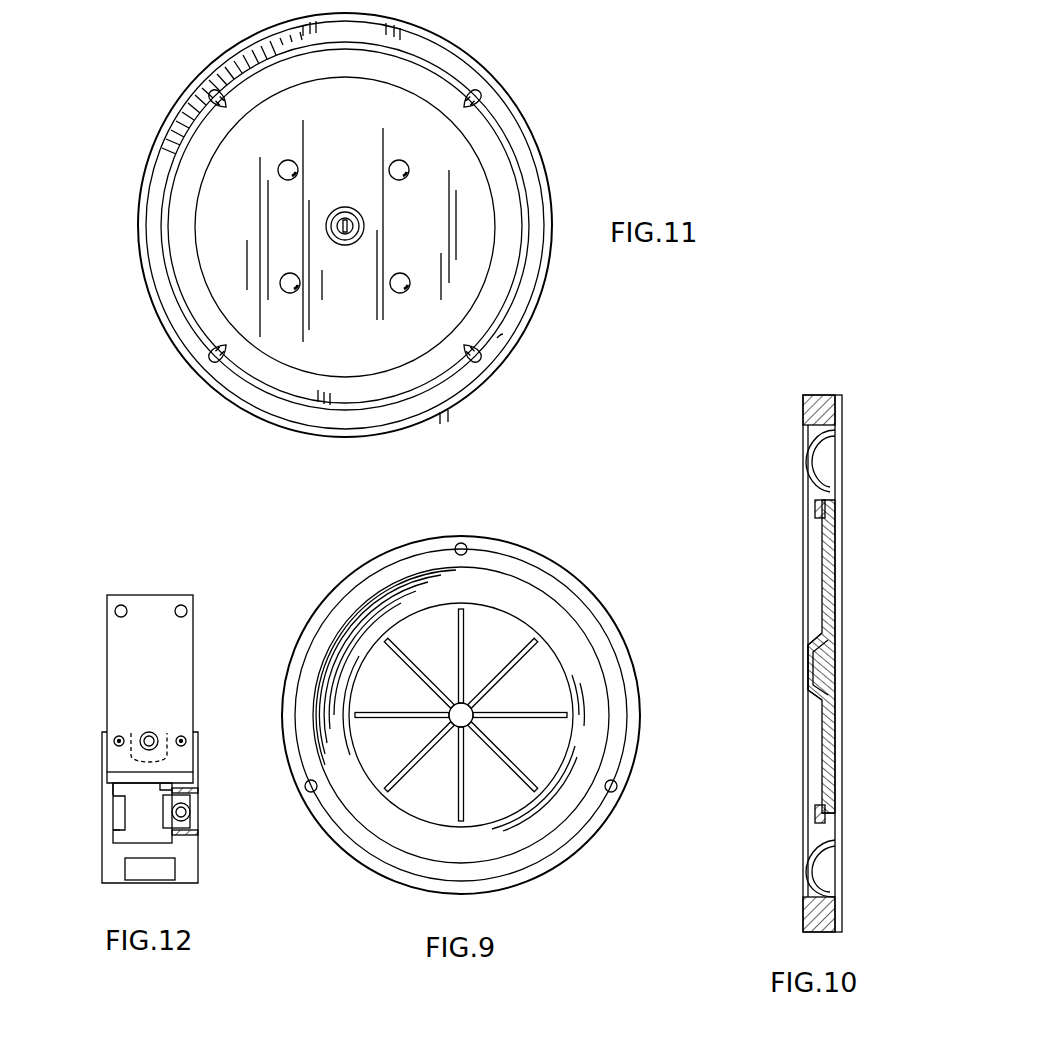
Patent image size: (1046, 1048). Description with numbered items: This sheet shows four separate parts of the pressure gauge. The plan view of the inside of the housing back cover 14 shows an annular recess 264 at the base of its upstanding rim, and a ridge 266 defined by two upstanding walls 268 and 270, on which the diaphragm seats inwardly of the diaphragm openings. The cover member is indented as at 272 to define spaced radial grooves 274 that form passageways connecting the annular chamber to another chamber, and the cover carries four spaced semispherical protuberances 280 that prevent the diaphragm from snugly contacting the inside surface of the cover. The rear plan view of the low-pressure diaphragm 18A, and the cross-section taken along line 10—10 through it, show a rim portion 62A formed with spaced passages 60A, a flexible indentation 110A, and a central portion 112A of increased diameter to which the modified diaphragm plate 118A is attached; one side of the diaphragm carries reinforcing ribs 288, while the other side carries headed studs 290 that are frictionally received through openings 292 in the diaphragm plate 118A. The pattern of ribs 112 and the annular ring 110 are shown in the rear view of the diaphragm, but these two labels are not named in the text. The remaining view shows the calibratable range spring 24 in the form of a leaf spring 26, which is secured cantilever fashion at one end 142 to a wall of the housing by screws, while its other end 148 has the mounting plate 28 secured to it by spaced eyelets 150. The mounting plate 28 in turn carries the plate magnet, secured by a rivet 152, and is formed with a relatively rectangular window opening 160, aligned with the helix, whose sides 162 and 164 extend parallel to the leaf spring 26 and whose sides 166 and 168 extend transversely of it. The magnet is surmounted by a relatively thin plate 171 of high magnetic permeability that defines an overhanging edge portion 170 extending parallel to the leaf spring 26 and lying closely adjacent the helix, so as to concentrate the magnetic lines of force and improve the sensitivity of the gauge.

In FIG. 11, the cover 14 is at (550, 165).
In FIG. 11, the annular recess 264 is at (538, 207).
In FIG. 11, the indentation 272 is at (525, 98).
In FIG. 11, the upstanding wall 270 is at (508, 265).
In FIG. 11, the ridge 266 is at (503, 312).
In FIG. 11, the upstanding wall 268 is at (497, 338).
In FIG. 11, the radial grooves 274 is at (476, 92).
In FIG. 11, the semispherical protuberances 280 is at (408, 166).
In FIG. 9, the diaphragm 18A is at (385, 890).
In FIG. 9, the rim portion 62A is at (630, 683).
In FIG. 10, the rim portion 62A is at (815, 395).
In FIG. 9, the annular ring 110 is at (580, 640).
In FIG. 9, the flexible indentation 110A is at (597, 733).
In FIG. 10, the flexible indentation 110A is at (815, 462).
In FIG. 9, the reinforcing ribs 288 is at (560, 640).
In FIG. 10, the reinforcing ribs 288 is at (835, 813).
In FIG. 9, the central portion 112A is at (560, 673).
In FIG. 10, the central portion 112A is at (822, 590).
In FIG. 9, the spokes 112 is at (507, 630).
In FIG. 9, the passages 60A is at (464, 543).
In FIG. 9, the section line 10 is at (338, 548).
In FIG. 10, the openings 292 is at (817, 520).
In FIG. 10, the diaphragm plate 118A is at (812, 695).
In FIG. 10, the headed studs 290 is at (815, 510).
In FIG. 12, the range spring 24 is at (197, 622).
In FIG. 12, the end of leaf spring 142 is at (141, 603).
In FIG. 12, the leaf spring 26 is at (170, 654).
In FIG. 12, the mounting plate 28 is at (190, 784).
In FIG. 12, the eyelets 150 is at (122, 735).
In FIG. 12, the other end of leaf spring 148 is at (112, 756).
In FIG. 12, the side of window opening 162 is at (165, 783).
In FIG. 12, the side of window opening 168 is at (114, 788).
In FIG. 12, the side of window opening 164 is at (118, 818).
In FIG. 12, the side of window opening 166 is at (114, 838).
In FIG. 12, the overhanging edge portion 170 is at (190, 798).
In FIG. 12, the rivet 152 is at (190, 812).
In FIG. 12, the plate of high-magnetic permeability 171 is at (190, 826).
In FIG. 12, the window opening 160 is at (150, 835).